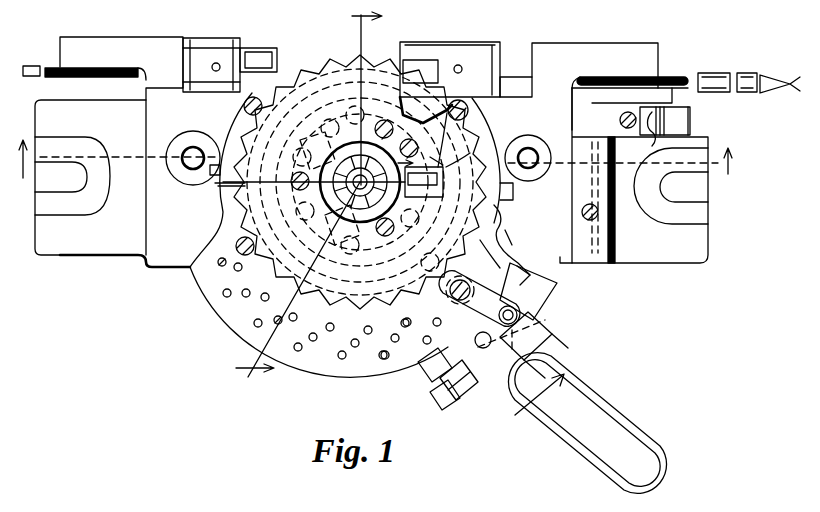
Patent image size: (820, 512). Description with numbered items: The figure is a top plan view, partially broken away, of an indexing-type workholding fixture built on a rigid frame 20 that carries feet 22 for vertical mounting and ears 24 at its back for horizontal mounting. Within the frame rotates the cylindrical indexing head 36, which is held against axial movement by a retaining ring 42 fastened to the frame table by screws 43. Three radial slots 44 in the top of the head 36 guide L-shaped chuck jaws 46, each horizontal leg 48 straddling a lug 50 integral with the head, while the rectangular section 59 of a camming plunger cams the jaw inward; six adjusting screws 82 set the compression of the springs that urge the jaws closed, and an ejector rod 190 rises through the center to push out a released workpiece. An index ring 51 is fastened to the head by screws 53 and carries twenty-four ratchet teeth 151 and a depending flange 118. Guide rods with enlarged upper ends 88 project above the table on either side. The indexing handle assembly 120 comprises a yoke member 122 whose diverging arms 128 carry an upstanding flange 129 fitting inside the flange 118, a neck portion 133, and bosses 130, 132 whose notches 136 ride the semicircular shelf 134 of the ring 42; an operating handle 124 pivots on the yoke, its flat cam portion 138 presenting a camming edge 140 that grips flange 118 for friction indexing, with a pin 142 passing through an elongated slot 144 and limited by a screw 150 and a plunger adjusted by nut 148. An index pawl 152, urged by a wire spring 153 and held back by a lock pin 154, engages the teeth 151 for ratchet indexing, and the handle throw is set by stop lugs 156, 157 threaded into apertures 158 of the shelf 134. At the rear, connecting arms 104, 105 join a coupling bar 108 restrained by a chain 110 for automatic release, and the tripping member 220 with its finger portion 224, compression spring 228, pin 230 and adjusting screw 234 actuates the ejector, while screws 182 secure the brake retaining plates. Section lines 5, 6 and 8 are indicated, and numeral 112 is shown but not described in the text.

The section line 5- 5 is at (373, 170).
The section line 6- 6 is at (313, 193).
The section line 8- 8 is at (389, 236).
The frame 20 is at (139, 279).
The feet 22 is at (666, 253).
The ears 24 is at (64, 40).
The indexing head 36 is at (437, 147).
The retaining ring 42 is at (237, 118).
The screws 43 is at (236, 245).
The radial slots 44 is at (445, 153).
The chuck jaws 46 is at (285, 126).
The horizontal leg 48 is at (445, 192).
The lug 50 is at (467, 157).
The index ring 51 is at (312, 70).
The screws 53 is at (372, 60).
The rectangular section 59 is at (445, 183).
The adjusting screw 82 is at (353, 108).
The enlarged upper ends 88 is at (190, 150).
The connecting arm 104 is at (421, 45).
The connecting arm 105 is at (200, 40).
The coupling bar 108 is at (512, 77).
The chain 110 is at (763, 73).
The guide projection 112 is at (270, 48).
The annular flange 118 is at (347, 319).
The indexing handle assembly 120 is at (567, 350).
The yoke member 122 is at (518, 266).
The operating handle 124 is at (642, 434).
The arms 128 is at (457, 263).
The upstanding flange 129 is at (514, 193).
The boss 130 is at (463, 390).
The boss 132 is at (553, 305).
The neck portion 133 is at (521, 232).
The semicircular shelf 134 is at (262, 295).
The notches 136 is at (424, 270).
The flat cam portion 138 is at (426, 376).
The camming edge 140 is at (488, 270).
The pin 142 is at (486, 350).
The elongated slot 144 is at (528, 333).
The nut 148 is at (562, 274).
The screw 150 is at (448, 400).
The ratchet teeth 151 is at (232, 192).
The index pawl 152 is at (410, 338).
The wire spring 153 is at (528, 291).
The lock pin 154 is at (518, 316).
The stop lug 156 is at (512, 251).
The stop lug 157 is at (218, 265).
The apertures 158 is at (355, 347).
The screws 182 is at (250, 158).
The ejector rod 190 is at (314, 182).
The tripping member 220 is at (646, 100).
The finger portion 224 is at (582, 98).
The compression spring 228 is at (652, 140).
The pin 230 is at (666, 125).
The adjusting screw 234 is at (619, 120).